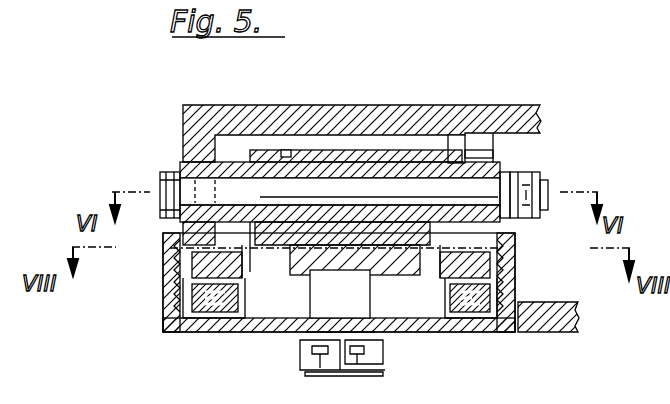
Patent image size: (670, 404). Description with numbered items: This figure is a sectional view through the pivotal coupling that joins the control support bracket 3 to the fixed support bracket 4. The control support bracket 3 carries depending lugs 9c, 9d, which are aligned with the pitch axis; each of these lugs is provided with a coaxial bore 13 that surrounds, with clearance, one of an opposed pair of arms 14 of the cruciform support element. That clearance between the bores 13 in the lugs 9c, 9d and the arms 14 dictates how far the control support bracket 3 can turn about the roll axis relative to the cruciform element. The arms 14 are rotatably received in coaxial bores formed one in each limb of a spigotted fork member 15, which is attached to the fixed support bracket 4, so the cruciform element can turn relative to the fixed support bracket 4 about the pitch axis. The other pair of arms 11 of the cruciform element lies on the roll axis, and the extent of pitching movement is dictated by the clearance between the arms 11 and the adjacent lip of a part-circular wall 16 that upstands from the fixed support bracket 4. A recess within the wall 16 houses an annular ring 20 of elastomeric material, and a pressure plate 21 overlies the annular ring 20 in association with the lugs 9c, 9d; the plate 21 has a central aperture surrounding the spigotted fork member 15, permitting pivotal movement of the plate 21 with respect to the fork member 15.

The control support bracket 3 is at (276, 106).
The fixed support bracket 4 is at (545, 332).
The depending lug 9c is at (500, 154).
The depending lug 9d is at (176, 250).
The arm 11 is at (344, 194).
The coaxial bore 13 is at (184, 166).
The arm 14 is at (440, 192).
The spigotted fork member 15 is at (298, 320).
The part-circular wall 16 is at (196, 288).
The annular ring 20 is at (212, 330).
The pressure plate 21 is at (200, 306).